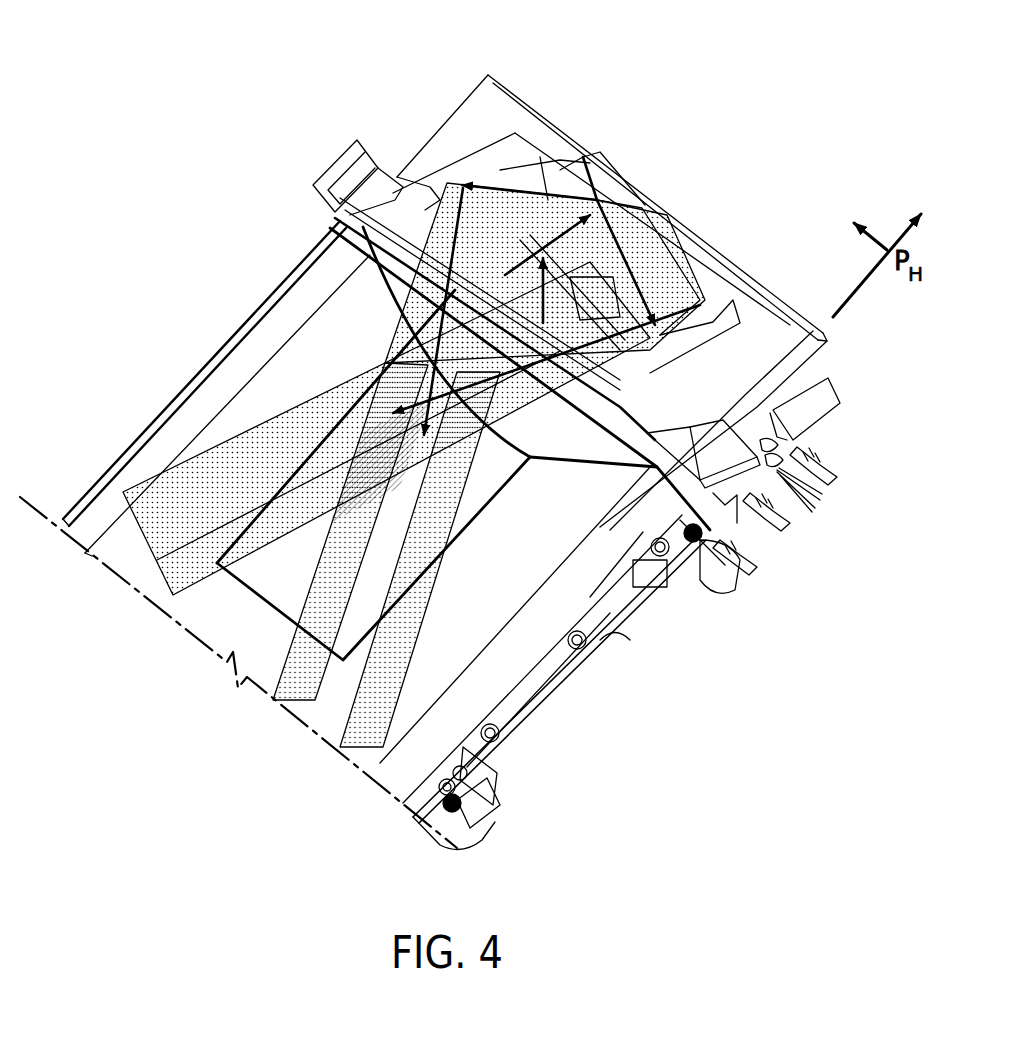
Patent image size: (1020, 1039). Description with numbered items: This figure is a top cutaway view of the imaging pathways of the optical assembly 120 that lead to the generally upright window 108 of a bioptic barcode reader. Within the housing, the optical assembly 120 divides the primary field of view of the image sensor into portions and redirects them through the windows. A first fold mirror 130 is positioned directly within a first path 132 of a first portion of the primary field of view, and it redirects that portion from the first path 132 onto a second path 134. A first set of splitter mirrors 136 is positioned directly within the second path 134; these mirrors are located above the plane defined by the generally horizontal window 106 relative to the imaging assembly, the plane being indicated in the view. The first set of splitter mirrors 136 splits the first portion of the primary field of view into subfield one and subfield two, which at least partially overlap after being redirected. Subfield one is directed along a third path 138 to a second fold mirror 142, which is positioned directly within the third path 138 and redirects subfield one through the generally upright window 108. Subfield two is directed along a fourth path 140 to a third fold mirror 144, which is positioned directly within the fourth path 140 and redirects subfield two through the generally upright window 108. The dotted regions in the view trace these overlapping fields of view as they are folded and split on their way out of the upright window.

The generally horizontal window 106 is at (490, 467).
The generally upright window 108 is at (333, 193).
The optical assembly 120 is at (727, 198).
The first fold mirror 130 is at (370, 240).
The first path 132 is at (380, 297).
The second path 134 is at (575, 250).
The first set of splitter mirrors 136 is at (588, 172).
The third path 138 is at (497, 183).
The fourth path 140 is at (665, 275).
The second fold mirror 142 is at (477, 160).
The third fold mirror 144 is at (713, 325).